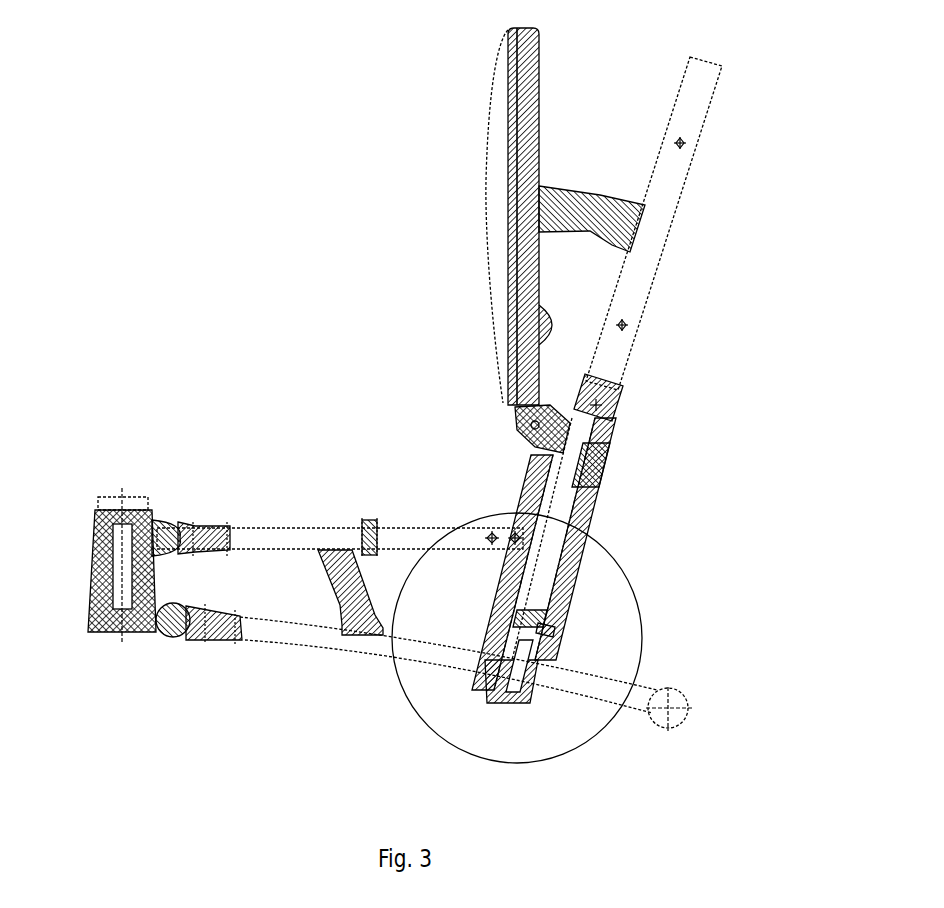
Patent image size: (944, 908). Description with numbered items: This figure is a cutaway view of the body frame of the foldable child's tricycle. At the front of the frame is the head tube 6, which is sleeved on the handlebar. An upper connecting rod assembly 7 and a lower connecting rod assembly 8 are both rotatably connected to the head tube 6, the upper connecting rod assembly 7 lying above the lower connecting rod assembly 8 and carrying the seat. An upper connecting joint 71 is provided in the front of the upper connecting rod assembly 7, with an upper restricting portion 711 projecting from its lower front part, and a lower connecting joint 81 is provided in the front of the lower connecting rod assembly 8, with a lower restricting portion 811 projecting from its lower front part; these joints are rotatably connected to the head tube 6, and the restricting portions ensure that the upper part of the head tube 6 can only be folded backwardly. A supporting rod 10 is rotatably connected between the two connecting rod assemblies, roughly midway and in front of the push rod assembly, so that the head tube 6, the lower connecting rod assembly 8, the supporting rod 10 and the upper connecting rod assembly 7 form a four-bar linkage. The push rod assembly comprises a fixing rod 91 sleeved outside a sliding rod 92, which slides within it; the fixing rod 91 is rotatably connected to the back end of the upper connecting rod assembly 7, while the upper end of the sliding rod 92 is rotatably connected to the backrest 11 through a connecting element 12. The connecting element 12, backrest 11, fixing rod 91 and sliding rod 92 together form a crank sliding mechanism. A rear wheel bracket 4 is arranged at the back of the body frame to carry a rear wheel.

The backrest 11 is at (518, 197).
The connecting element 12 is at (592, 220).
The sliding rod 92 is at (597, 413).
The fixing rod 91 is at (593, 500).
The upper connecting rod assembly 7 is at (301, 540).
The supporting rod 10 is at (355, 583).
The upper connecting joint 71 is at (211, 530).
The upper restricting portion 711 is at (150, 505).
The head tube 6 is at (88, 625).
The lower restricting portion 811 is at (165, 635).
The lower connecting joint 81 is at (205, 633).
The lower connecting rod assembly 8 is at (318, 637).
The rear wheel bracket 4 is at (612, 693).